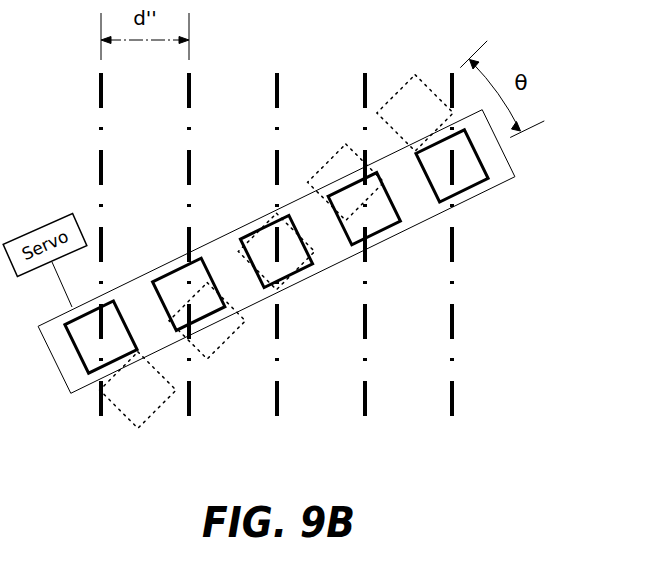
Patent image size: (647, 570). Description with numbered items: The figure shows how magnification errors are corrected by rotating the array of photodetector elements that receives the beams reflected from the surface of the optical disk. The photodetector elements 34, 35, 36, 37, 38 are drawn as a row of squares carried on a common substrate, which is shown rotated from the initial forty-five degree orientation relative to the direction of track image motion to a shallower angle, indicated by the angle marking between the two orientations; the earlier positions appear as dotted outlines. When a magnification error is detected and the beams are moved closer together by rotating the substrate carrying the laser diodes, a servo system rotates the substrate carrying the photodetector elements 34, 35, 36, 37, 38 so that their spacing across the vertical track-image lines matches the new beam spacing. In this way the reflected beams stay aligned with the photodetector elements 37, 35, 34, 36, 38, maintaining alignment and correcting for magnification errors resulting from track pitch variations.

The photodetector element 34 is at (290, 282).
The photodetector element 35 is at (175, 270).
The photodetector element 36 is at (378, 235).
The photodetector element 37 is at (75, 352).
The photodetector element 38 is at (475, 186).